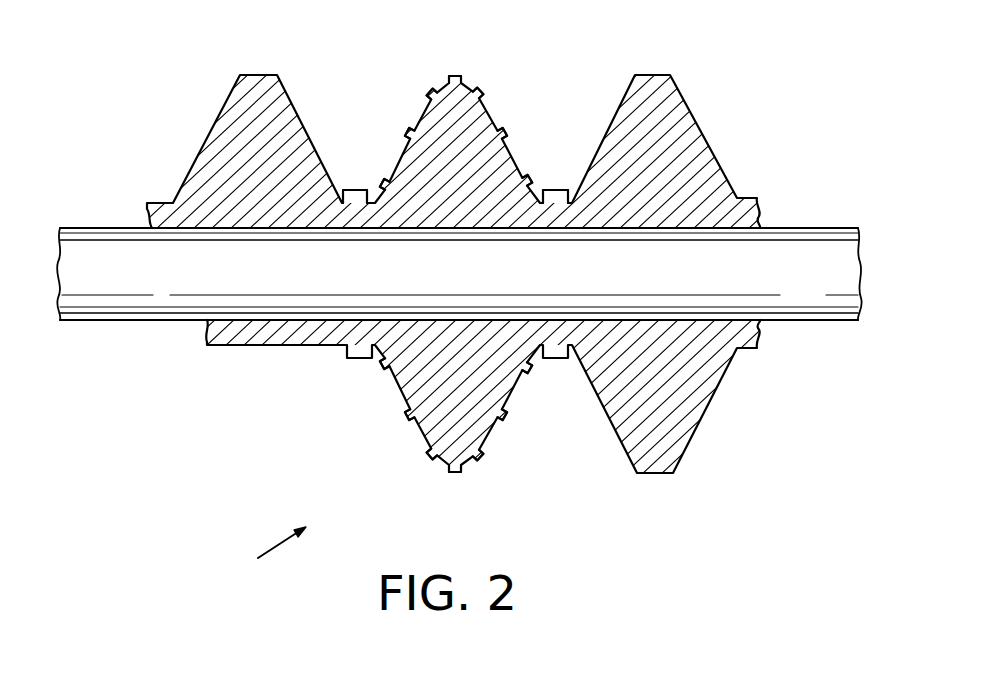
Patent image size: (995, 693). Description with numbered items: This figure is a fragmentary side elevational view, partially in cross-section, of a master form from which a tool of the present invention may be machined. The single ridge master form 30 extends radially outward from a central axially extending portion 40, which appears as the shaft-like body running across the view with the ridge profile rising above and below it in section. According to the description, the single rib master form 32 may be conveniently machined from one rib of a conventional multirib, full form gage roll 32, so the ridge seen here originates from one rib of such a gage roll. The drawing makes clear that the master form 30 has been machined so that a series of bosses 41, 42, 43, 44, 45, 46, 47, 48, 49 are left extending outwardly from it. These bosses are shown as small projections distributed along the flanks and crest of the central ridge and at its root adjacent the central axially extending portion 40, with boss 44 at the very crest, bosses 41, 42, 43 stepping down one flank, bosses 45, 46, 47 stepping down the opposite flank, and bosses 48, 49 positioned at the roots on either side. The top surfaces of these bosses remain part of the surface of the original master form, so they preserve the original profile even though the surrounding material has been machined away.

The single ridge master form 30 is at (253, 585).
The single rib master form 32 is at (660, 137).
The central axially extending portion 40 is at (795, 290).
The boss 41 is at (378, 184).
The boss 42 is at (407, 130).
The boss 43 is at (430, 90).
The boss 44 is at (456, 76).
The boss 45 is at (481, 91).
The boss 46 is at (505, 133).
The boss 47 is at (530, 180).
The boss 48 is at (357, 198).
The boss 49 is at (557, 198).